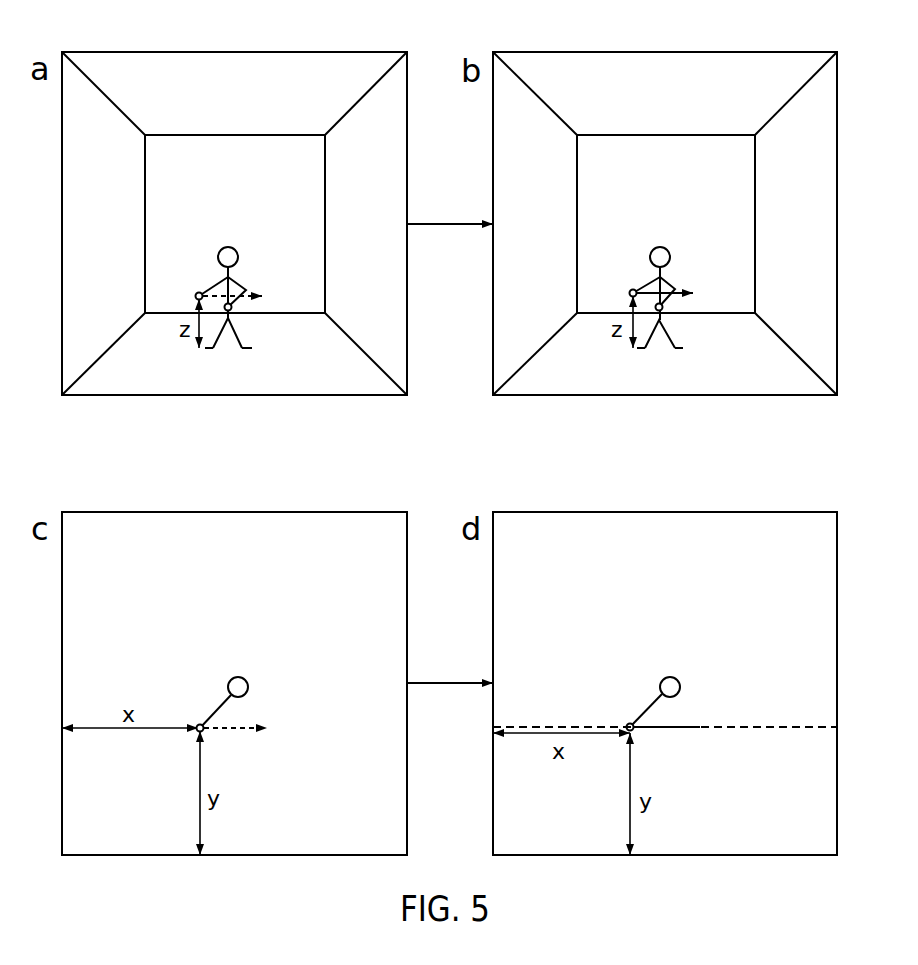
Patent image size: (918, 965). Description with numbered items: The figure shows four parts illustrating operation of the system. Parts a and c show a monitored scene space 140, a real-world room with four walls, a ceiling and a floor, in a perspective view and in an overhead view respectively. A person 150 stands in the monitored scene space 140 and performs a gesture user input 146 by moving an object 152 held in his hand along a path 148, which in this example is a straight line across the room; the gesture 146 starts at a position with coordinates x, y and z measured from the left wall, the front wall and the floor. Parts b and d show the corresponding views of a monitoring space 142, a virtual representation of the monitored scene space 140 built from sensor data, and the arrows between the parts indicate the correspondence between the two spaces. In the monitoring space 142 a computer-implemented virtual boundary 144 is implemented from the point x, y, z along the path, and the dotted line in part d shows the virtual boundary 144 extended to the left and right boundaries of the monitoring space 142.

The monitored scene space 140 is at (297, 72).
The monitoring space 142 is at (728, 72).
The computer-implemented virtual boundary 144 is at (678, 295).
The gesture user input 146 is at (250, 298).
The path 148 is at (263, 278).
The person 150 is at (223, 248).
The object 152 is at (197, 292).